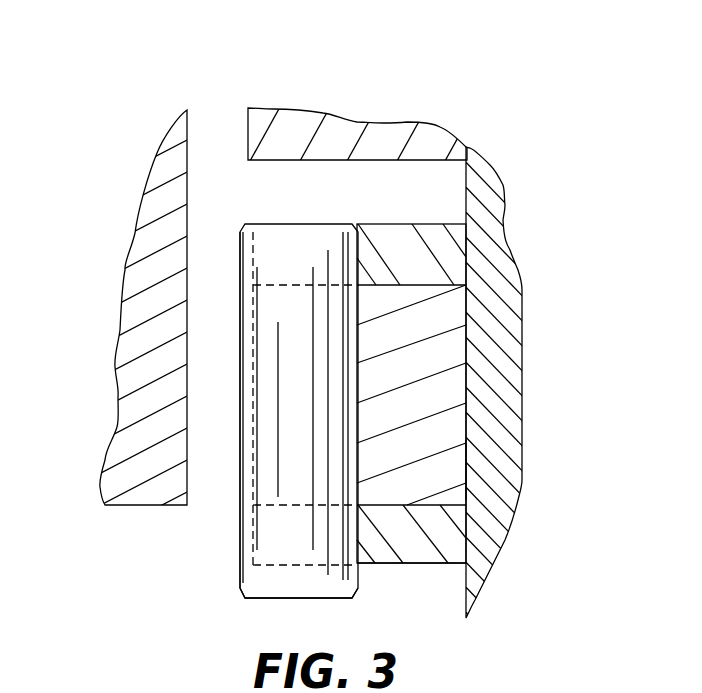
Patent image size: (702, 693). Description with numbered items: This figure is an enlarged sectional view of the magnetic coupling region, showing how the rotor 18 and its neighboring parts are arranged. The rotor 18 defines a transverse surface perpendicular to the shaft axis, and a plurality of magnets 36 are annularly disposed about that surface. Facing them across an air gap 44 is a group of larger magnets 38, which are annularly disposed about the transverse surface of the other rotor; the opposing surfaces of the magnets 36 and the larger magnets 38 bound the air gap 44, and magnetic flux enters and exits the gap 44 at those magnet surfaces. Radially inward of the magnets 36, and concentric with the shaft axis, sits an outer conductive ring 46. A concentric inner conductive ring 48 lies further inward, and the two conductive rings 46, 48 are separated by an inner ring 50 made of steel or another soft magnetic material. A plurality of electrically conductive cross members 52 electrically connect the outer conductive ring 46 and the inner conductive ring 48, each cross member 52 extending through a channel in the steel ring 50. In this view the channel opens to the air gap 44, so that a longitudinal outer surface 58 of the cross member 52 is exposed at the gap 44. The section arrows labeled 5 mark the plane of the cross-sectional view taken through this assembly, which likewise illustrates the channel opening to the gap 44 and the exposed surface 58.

The rotor 18 is at (505, 249).
The magnets 36 is at (247, 129).
The larger magnets 38 is at (147, 506).
The air gap 44 is at (221, 502).
The outer conductive ring 46 is at (396, 224).
The inner conductive ring 48 is at (385, 566).
The inner ring 50 is at (470, 467).
The cross members 52 is at (240, 587).
The longitudinal outer surface 58 is at (239, 455).
The section line 5- 5 is at (232, 398).